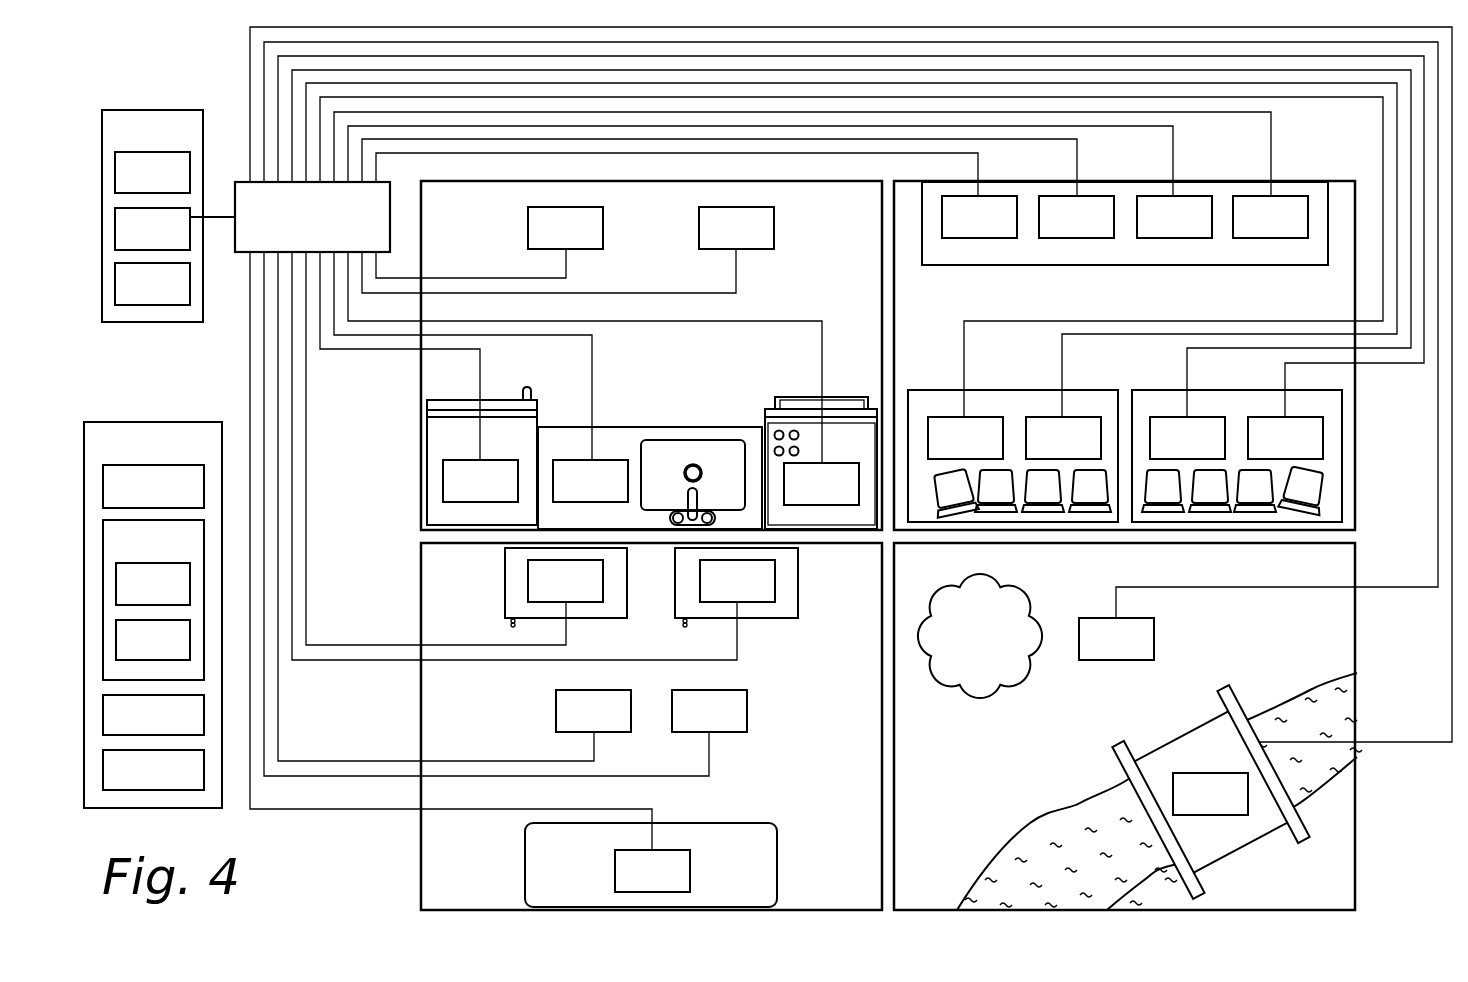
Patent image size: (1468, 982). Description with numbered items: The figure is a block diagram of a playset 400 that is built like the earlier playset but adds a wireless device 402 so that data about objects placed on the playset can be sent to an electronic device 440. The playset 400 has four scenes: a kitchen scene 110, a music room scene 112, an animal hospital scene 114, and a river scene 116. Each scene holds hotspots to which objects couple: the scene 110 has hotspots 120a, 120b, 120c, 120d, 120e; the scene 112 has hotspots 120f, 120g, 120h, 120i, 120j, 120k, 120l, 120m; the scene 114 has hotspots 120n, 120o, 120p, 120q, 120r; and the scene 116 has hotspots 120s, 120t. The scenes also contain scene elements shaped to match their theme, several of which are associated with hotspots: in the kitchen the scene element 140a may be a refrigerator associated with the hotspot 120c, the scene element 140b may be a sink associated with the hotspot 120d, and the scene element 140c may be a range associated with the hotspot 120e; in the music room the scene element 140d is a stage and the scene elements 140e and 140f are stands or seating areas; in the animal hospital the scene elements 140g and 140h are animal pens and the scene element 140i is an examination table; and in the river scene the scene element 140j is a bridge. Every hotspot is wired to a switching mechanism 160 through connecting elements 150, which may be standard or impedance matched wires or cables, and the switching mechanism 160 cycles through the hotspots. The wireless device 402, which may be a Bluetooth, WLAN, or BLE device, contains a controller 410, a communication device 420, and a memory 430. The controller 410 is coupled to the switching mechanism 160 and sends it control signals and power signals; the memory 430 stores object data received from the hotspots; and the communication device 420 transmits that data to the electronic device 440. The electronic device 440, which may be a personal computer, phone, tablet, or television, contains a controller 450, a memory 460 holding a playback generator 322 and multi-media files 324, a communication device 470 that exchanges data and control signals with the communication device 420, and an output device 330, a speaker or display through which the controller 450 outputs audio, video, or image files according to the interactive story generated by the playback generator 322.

The playset 400 is at (389, 858).
The wireless device 402 is at (133, 142).
The controller 410 is at (133, 186).
The communication device 420 is at (133, 242).
The memory 430 is at (133, 297).
The electronic device 440 is at (134, 454).
The controller 450 is at (134, 499).
The memory 460 is at (134, 554).
The playback generator 322 is at (134, 597).
The multi-media files 324 is at (134, 653).
The communication device 470 is at (134, 728).
The output device 330 is at (134, 783).
The switching mechanism 160 is at (293, 230).
The connecting elements 150 is at (250, 78).
The scene 110 is at (807, 300).
The scene 112 is at (926, 300).
The scene 114 is at (807, 788).
The scene 116 is at (927, 788).
The hotspot 120a is at (594, 243).
The hotspot 120b is at (765, 243).
The hotspot 120c is at (509, 496).
The hotspot 120d is at (619, 496).
The hotspot 120e is at (850, 499).
The hotspot 120f is at (1008, 232).
The hotspot 120g is at (1105, 232).
The hotspot 120h is at (1203, 232).
The hotspot 120i is at (1299, 232).
The hotspot 120j is at (994, 453).
The hotspot 120k is at (1092, 453).
The hotspot 120l is at (1216, 453).
The hotspot 120m is at (1314, 453).
The hotspot 120n is at (594, 596).
The hotspot 120o is at (766, 596).
The hotspot 120p is at (622, 726).
The hotspot 120q is at (738, 726).
The hotspot 120r is at (681, 886).
The hotspot 120s is at (1145, 654).
The hotspot 120t is at (1239, 809).
The scene element 140a is at (503, 398).
The scene element 140b is at (700, 426).
The scene element 140c is at (798, 397).
The scene element 140d is at (1230, 267).
The scene element 140e is at (939, 389).
The scene element 140f is at (1167, 389).
The scene element 140g is at (590, 618).
The scene element 140h is at (760, 618).
The scene element 140i is at (777, 855).
The scene element 140j is at (1242, 855).